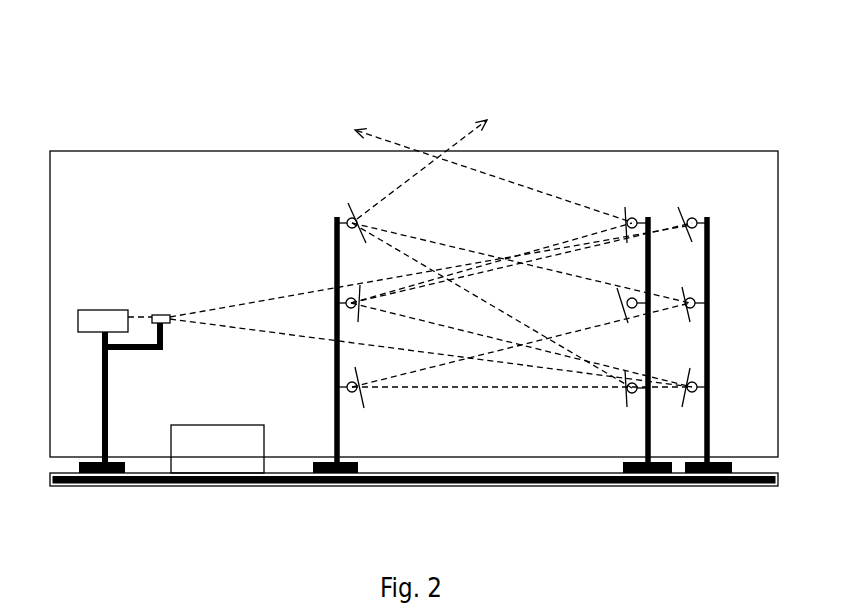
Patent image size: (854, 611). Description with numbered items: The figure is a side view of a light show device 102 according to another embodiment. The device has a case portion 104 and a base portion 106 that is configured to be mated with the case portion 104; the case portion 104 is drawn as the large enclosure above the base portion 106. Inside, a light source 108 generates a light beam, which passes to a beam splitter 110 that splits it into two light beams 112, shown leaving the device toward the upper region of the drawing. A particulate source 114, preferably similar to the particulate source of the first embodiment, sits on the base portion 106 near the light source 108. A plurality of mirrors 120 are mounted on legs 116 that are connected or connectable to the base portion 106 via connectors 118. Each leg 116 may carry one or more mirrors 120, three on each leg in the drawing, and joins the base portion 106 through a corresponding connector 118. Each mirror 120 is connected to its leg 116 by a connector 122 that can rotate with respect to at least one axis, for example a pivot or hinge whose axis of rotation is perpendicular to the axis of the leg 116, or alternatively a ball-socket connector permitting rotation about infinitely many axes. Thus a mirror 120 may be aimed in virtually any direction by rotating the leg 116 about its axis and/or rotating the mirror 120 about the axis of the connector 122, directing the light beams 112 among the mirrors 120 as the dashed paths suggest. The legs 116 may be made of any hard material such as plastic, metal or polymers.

The light show device 102 is at (161, 113).
The case portion 104 is at (110, 150).
The base portion 106 is at (190, 484).
The light source 108 is at (96, 320).
The beam splitter 110 is at (163, 316).
The light beams 112 is at (473, 128).
The particulate source 114 is at (217, 449).
The legs 116 is at (650, 268).
The connectors 118 is at (695, 462).
The mirrors 120 is at (345, 312).
The connector 122 is at (343, 295).